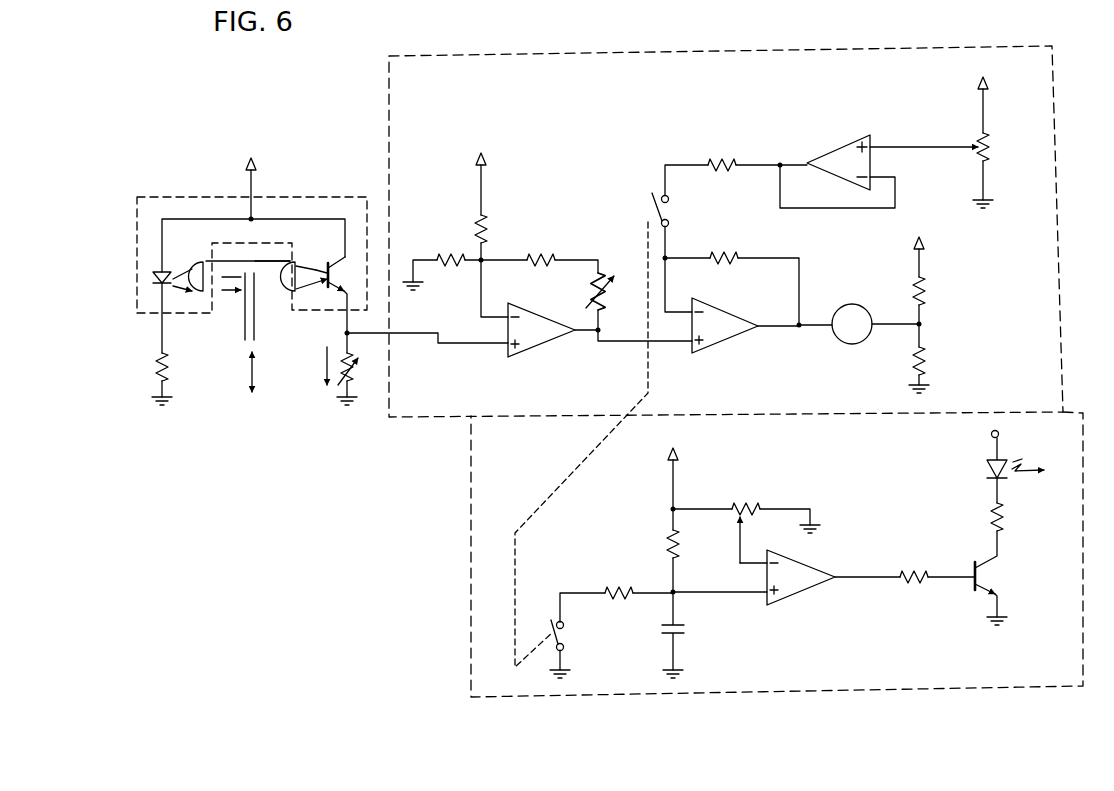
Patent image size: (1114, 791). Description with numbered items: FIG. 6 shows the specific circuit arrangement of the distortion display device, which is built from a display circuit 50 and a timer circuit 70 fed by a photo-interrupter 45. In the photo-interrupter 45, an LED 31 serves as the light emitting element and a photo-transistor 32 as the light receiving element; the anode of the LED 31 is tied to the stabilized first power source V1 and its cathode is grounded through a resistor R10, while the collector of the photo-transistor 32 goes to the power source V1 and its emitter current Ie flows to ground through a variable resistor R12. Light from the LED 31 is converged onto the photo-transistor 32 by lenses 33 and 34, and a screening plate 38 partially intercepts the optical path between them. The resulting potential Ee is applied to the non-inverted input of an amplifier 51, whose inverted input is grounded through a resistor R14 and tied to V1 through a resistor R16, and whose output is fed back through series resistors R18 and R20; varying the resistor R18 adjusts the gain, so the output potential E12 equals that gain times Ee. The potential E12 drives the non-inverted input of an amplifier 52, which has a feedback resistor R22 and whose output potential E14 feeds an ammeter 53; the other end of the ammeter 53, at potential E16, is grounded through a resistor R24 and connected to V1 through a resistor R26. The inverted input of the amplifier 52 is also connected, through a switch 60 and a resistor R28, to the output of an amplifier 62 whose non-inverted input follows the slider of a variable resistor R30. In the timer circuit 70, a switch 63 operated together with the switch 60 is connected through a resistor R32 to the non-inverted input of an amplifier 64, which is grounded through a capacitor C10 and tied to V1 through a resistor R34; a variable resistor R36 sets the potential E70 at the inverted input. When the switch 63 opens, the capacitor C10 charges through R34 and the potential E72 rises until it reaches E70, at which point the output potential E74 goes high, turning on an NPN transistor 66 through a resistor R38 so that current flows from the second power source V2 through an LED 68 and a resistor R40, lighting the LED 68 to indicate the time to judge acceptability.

The photo-interrupter 45 is at (168, 203).
The LED 31 is at (155, 280).
The photo-transistor 32 is at (334, 262).
The lens 33 is at (209, 295).
The lens 34 is at (297, 309).
The screening plate 38 is at (257, 328).
The resistor R10 is at (179, 375).
The variable resistor R12 is at (362, 385).
The emitter current Ie is at (328, 383).
The first power source V1 is at (618, 279).
The second power source V2 is at (1009, 434).
The display circuit 50 is at (1050, 257).
The timer circuit 70 is at (955, 684).
The resistor R14 is at (450, 275).
The resistor R16 is at (493, 222).
The feedback resistor R18 is at (617, 285).
The feedback resistor R20 is at (542, 248).
The amplifier 51 is at (544, 346).
The potential Ee is at (438, 345).
The output potential E12 is at (598, 344).
The switch 60 is at (671, 207).
The resistor R28 is at (723, 152).
The amplifier 62 is at (838, 148).
The variable resistor R30 is at (995, 151).
The resistor R22 is at (723, 250).
The amplifier 52 is at (733, 340).
The output potential E14 is at (801, 332).
The ammeter 53 is at (852, 303).
The resistor R26 is at (931, 288).
The potential E16 is at (925, 324).
The resistor R24 is at (933, 356).
The resistor R34 is at (660, 545).
The variable resistor R36 is at (745, 498).
The potential E70 is at (738, 561).
The resistor R32 is at (612, 589).
The switch 63 is at (567, 634).
The capacitor C10 is at (696, 636).
The amplifier 64 is at (798, 596).
The potential E72 is at (745, 596).
The output potential E74 is at (864, 579).
The resistor R38 is at (914, 566).
The NPN transistor 66 is at (1000, 572).
The resistor R40 is at (1007, 516).
The LED 68 is at (982, 471).